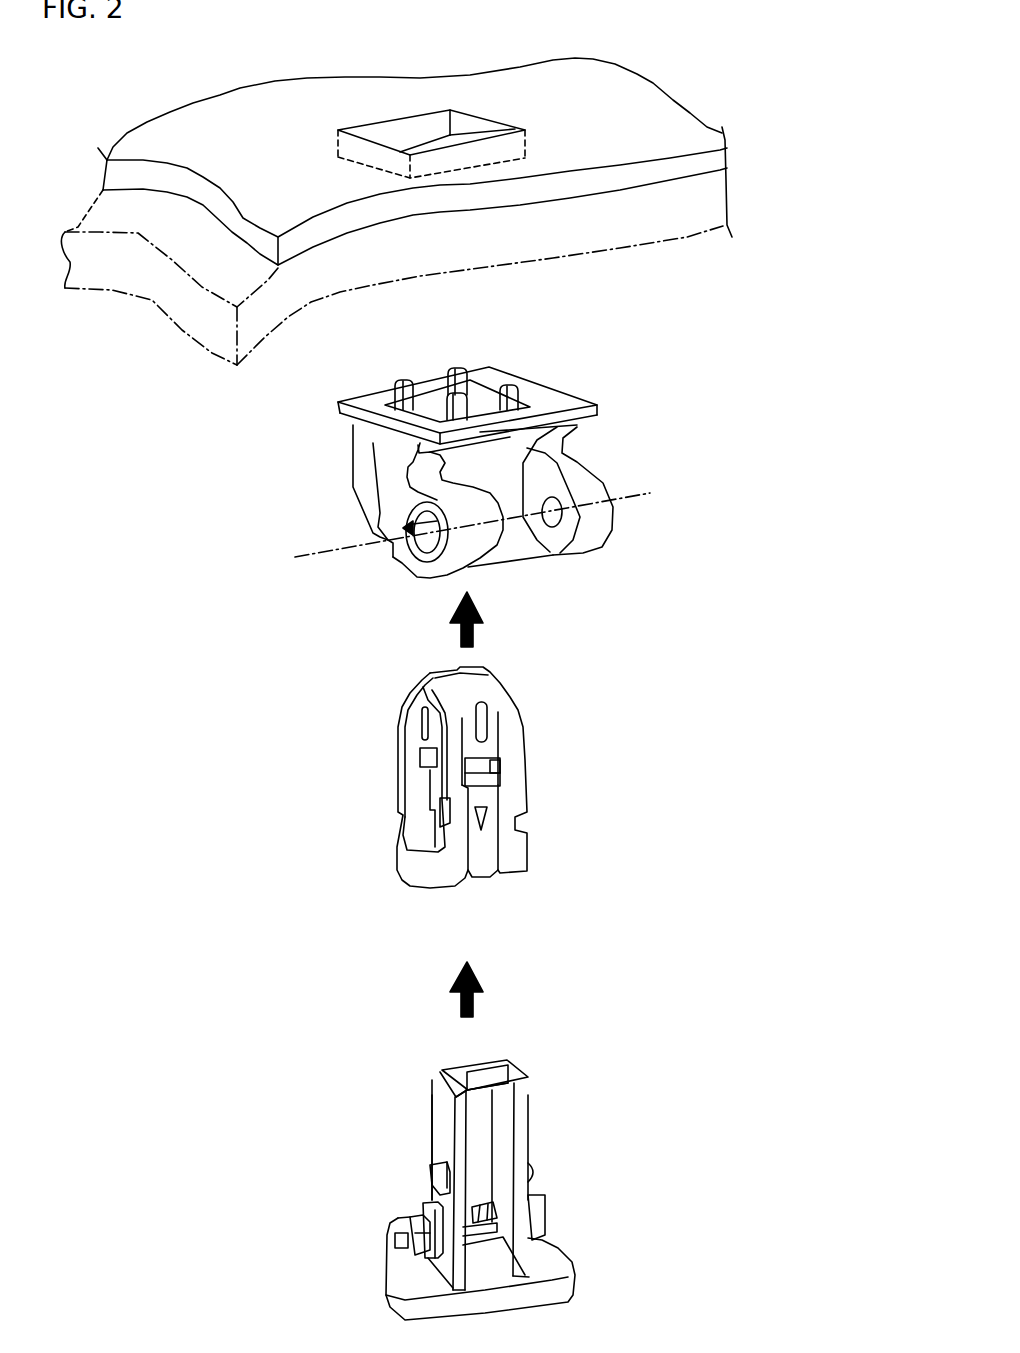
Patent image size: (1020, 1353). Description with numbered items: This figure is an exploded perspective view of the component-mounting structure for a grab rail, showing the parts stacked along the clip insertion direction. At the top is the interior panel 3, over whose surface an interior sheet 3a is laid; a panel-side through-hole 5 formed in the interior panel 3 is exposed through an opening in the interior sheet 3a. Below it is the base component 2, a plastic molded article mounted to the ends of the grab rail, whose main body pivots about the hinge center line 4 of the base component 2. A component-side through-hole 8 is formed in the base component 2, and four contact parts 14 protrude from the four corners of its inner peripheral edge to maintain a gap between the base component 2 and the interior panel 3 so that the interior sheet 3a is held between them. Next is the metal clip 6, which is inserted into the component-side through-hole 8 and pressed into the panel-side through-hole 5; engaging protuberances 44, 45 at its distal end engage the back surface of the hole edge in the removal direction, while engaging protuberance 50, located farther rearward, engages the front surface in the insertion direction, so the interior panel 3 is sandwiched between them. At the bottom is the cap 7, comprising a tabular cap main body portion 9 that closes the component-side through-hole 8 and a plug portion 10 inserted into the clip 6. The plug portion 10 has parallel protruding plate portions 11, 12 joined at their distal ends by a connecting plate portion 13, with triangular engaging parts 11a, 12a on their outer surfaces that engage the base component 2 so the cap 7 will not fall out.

The base component 2 is at (670, 420).
The interior panel 3 is at (731, 147).
The interior sheet 3a is at (436, 271).
The hinge center line 4 is at (668, 494).
The panel-side through-hole 5 is at (500, 120).
The clip 6 is at (547, 777).
The cap 7 is at (531, 1171).
The component-side through-hole 8 is at (424, 411).
The cap main body portion 9 is at (376, 1301).
The plug portion 10 is at (443, 1156).
The protruding plate portion 11 is at (442, 1132).
The engaging part 11a is at (430, 1178).
The protruding plate portion 12 is at (530, 1128).
The engaging part 12a is at (532, 1172).
The connecting plate portion 13 is at (480, 1063).
The contact parts 14 is at (397, 385).
The engaging protuberance 44 is at (467, 775).
The engaging protuberance 45 is at (502, 767).
The engaging protuberance 50 is at (443, 810).